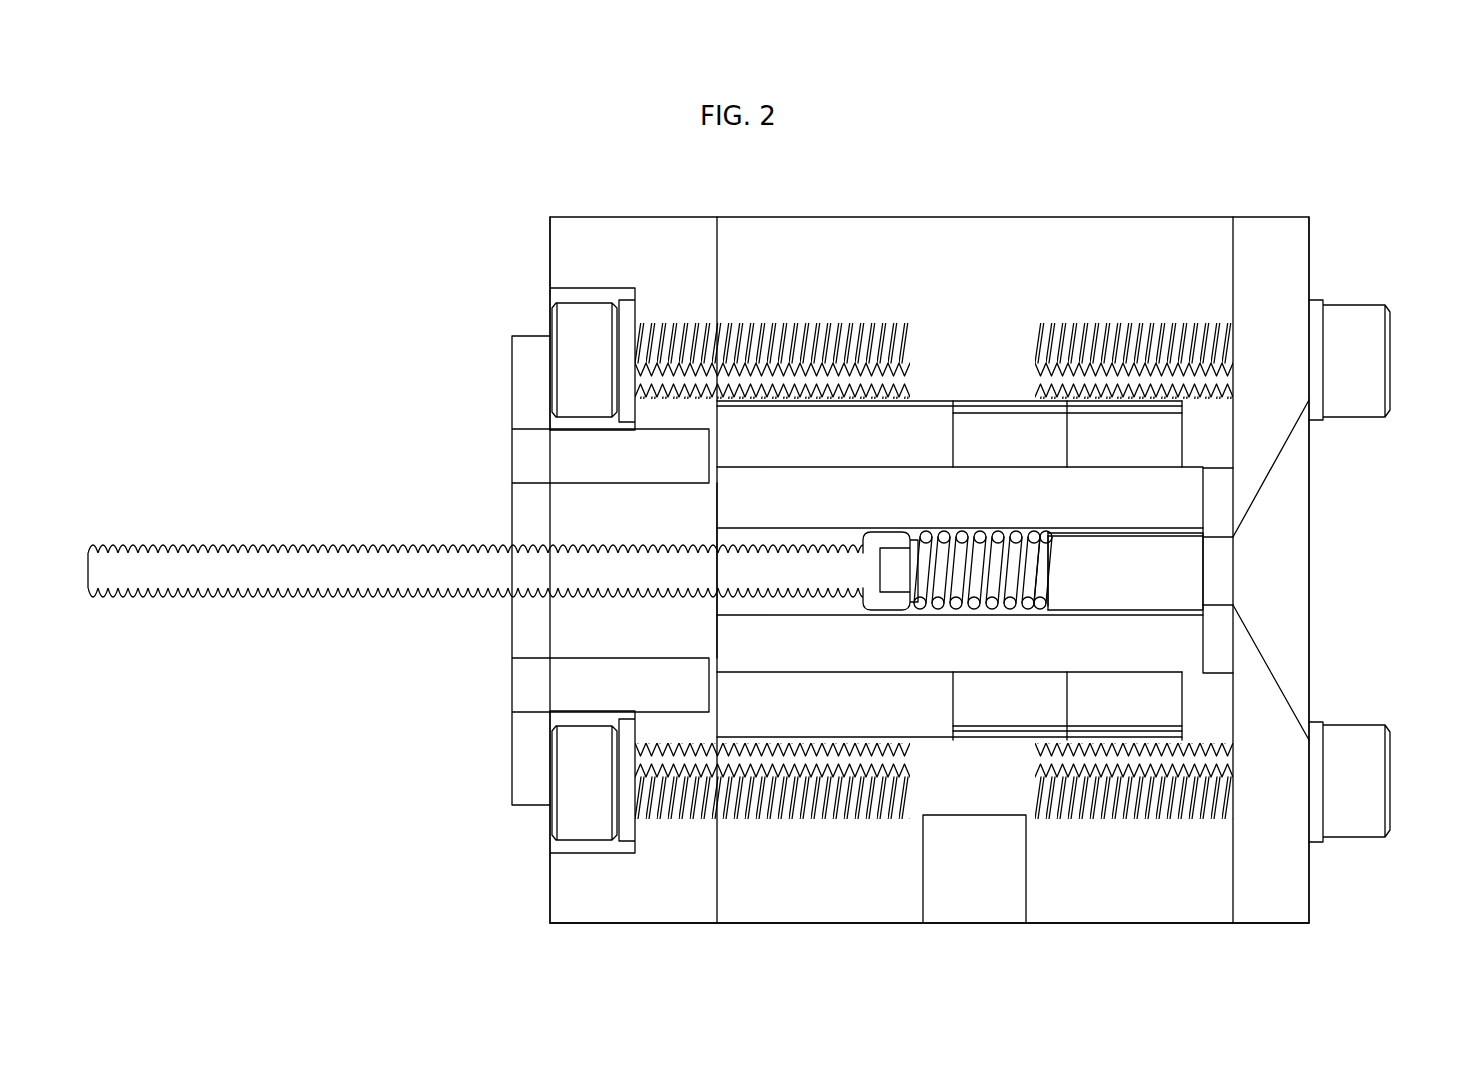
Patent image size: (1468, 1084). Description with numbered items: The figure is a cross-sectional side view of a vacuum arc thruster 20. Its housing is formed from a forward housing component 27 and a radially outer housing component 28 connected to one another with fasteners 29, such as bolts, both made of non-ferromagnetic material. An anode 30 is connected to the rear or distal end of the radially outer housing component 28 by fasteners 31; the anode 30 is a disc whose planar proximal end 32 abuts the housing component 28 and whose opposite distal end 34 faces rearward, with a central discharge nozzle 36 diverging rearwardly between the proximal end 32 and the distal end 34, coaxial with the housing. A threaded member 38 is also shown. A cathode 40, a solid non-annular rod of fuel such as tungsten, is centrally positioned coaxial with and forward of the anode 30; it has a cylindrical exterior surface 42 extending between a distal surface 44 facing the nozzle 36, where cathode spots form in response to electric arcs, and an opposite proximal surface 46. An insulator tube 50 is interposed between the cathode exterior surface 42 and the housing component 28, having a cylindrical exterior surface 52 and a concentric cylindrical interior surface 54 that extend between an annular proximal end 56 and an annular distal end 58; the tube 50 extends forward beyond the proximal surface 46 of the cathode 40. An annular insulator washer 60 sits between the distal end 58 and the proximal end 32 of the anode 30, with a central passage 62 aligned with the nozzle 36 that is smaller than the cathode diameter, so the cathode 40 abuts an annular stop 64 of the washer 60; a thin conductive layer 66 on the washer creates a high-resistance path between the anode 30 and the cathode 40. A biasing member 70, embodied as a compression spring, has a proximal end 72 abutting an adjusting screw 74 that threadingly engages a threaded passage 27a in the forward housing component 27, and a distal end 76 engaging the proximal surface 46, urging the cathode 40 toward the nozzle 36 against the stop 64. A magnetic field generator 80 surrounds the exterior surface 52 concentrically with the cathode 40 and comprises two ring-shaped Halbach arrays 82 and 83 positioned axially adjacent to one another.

The thruster 20 is at (418, 309).
The forward housing component 27 is at (570, 250).
The threaded passage 27a is at (586, 545).
The radially outer housing component 28 is at (1039, 240).
The fasteners 29 is at (580, 370).
The anode 30 is at (1297, 885).
The fasteners 31 is at (1385, 350).
The proximal end 32 is at (1233, 250).
The distal end 34 is at (1309, 250).
The central discharge nozzle 36 is at (1264, 572).
The threaded bolt 38 is at (934, 571).
The cathode 40 is at (1142, 584).
The cylindrical exterior surface 42 is at (1122, 530).
The distal surface 44 is at (1208, 560).
The proximal surface 46 is at (1050, 565).
The insulator tube 50 is at (798, 507).
The cylindrical exterior surface 52 is at (830, 465).
The cylindrical interior surface 54 is at (745, 605).
The proximal end 56 is at (717, 505).
The distal end 58 is at (1208, 490).
The insulator washer 60 is at (1221, 465).
The central passage 62 is at (1233, 549).
The annular stop 64 is at (1198, 600).
The conductive layer 66 is at (1222, 680).
The biasing member 70 is at (965, 605).
The proximal end 72 is at (918, 540).
The adjusting screw 74 is at (297, 560).
The distal end 76 is at (1035, 605).
The magnetic field generator 80 is at (1031, 391).
The Halbach array 82 is at (972, 428).
The Halbach array 83 is at (1104, 434).